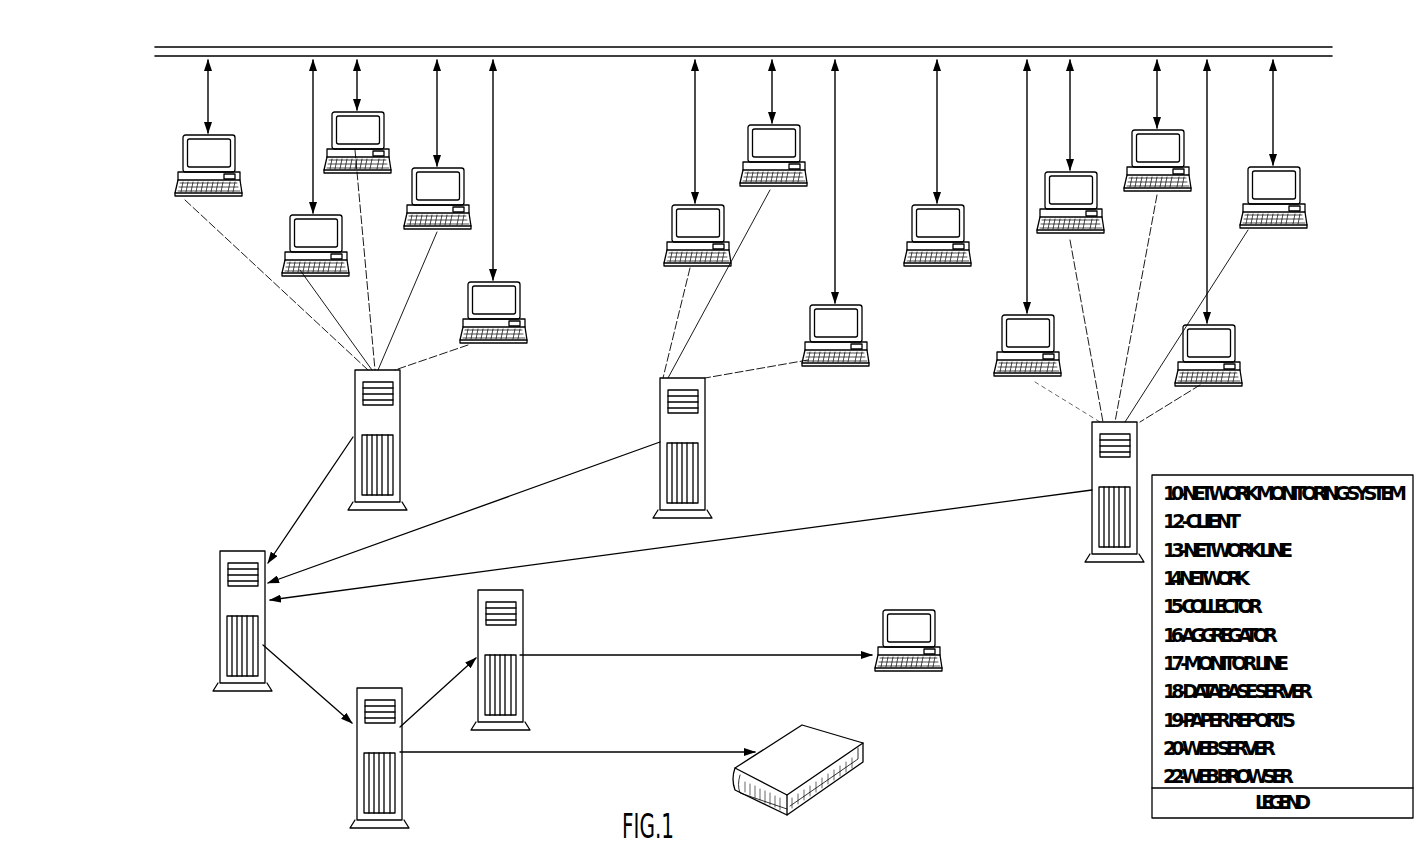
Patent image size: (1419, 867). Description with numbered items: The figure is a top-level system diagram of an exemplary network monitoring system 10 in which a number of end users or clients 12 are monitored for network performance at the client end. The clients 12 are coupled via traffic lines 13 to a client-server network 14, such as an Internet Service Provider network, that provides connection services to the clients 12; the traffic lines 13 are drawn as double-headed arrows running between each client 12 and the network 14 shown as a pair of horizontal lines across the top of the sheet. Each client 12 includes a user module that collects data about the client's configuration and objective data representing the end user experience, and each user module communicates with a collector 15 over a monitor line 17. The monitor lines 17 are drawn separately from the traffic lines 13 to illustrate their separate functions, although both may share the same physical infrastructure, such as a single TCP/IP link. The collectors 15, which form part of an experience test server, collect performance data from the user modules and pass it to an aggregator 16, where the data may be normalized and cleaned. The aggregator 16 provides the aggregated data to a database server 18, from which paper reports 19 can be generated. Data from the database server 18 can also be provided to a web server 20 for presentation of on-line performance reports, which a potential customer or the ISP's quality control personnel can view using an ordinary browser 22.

The network monitoring system 10 is at (1331, 129).
The client 12 is at (234, 135).
The traffic line 13 is at (208, 98).
The client-server network 14 is at (572, 57).
The collector 15 is at (402, 462).
The aggregator 16 is at (220, 622).
The monitor line 17 is at (238, 264).
The database server 18 is at (400, 745).
The paper reports 19 is at (836, 738).
The web server 20 is at (520, 627).
The browser 22 is at (940, 617).